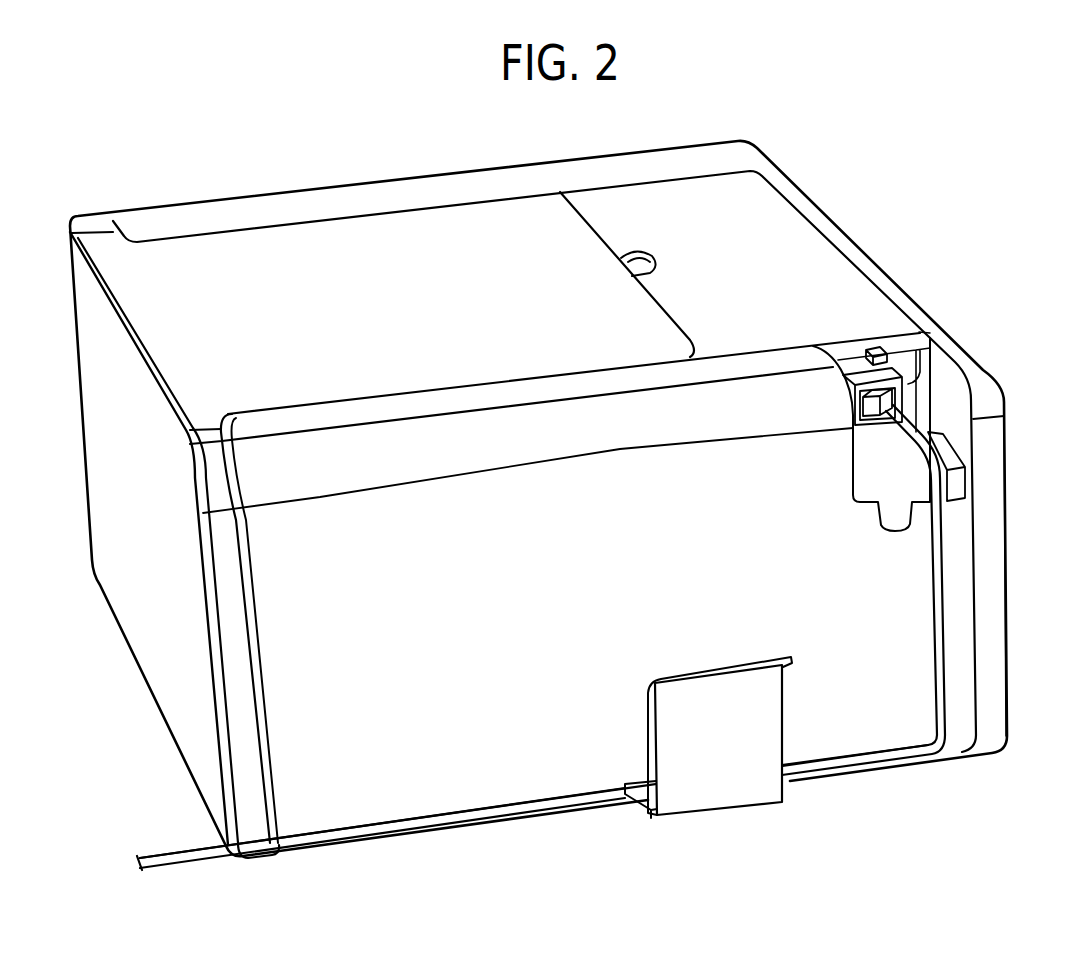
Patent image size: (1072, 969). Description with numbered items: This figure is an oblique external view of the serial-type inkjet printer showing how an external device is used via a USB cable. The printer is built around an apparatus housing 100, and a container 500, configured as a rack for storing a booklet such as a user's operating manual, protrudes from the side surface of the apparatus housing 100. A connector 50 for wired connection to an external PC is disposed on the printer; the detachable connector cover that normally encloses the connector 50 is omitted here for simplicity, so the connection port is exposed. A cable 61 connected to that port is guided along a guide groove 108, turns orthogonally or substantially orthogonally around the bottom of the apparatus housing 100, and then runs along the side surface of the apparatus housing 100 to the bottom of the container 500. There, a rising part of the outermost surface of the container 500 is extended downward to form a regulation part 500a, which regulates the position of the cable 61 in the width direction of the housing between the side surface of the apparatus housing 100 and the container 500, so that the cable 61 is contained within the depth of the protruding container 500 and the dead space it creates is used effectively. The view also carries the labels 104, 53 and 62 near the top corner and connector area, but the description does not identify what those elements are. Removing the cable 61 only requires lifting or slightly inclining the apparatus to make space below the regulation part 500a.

The apparatus housing 100 is at (827, 203).
The top cover 104 is at (960, 331).
The guide groove 108 is at (947, 568).
The connector 50 is at (900, 355).
The connector lever 53 is at (840, 350).
The cable 61 is at (917, 438).
The plug 62 is at (875, 423).
The container 500 is at (764, 744).
The regulation part 500a is at (718, 811).